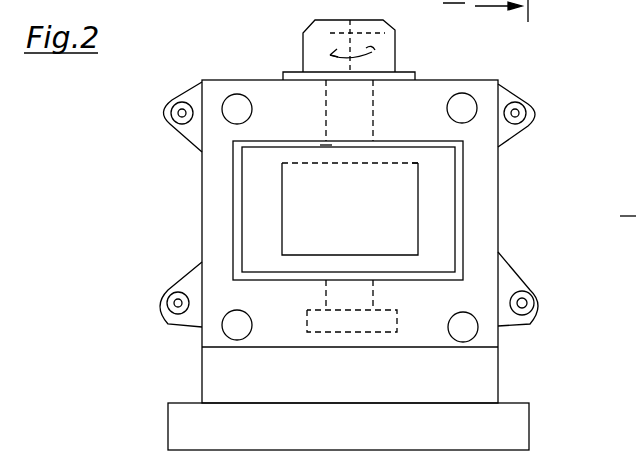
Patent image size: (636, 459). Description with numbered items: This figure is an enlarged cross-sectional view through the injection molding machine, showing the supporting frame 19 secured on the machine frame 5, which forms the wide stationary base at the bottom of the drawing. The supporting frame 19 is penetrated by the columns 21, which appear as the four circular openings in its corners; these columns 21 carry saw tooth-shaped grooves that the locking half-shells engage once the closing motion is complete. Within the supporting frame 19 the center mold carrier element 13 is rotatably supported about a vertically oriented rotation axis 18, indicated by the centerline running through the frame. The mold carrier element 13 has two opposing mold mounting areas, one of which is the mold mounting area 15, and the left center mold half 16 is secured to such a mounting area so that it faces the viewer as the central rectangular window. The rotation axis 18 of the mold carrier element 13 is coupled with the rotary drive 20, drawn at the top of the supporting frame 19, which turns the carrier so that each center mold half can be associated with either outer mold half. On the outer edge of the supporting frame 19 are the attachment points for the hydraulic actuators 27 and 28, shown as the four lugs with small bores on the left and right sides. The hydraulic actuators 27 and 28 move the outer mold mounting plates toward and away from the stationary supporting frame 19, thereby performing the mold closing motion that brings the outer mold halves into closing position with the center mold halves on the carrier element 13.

The machine frame 5 is at (185, 420).
The center mold carrier element 13 is at (458, 164).
The mold mounting area 15 is at (440, 200).
The left center mold half 16 is at (398, 232).
The rotation axis 18 is at (326, 145).
The supporting frame 19 is at (218, 207).
The rotary drive 20 is at (305, 62).
The columns 21 is at (236, 107).
The hydraulic actuator 27 is at (517, 113).
The hydraulic actuator 28 is at (182, 113).